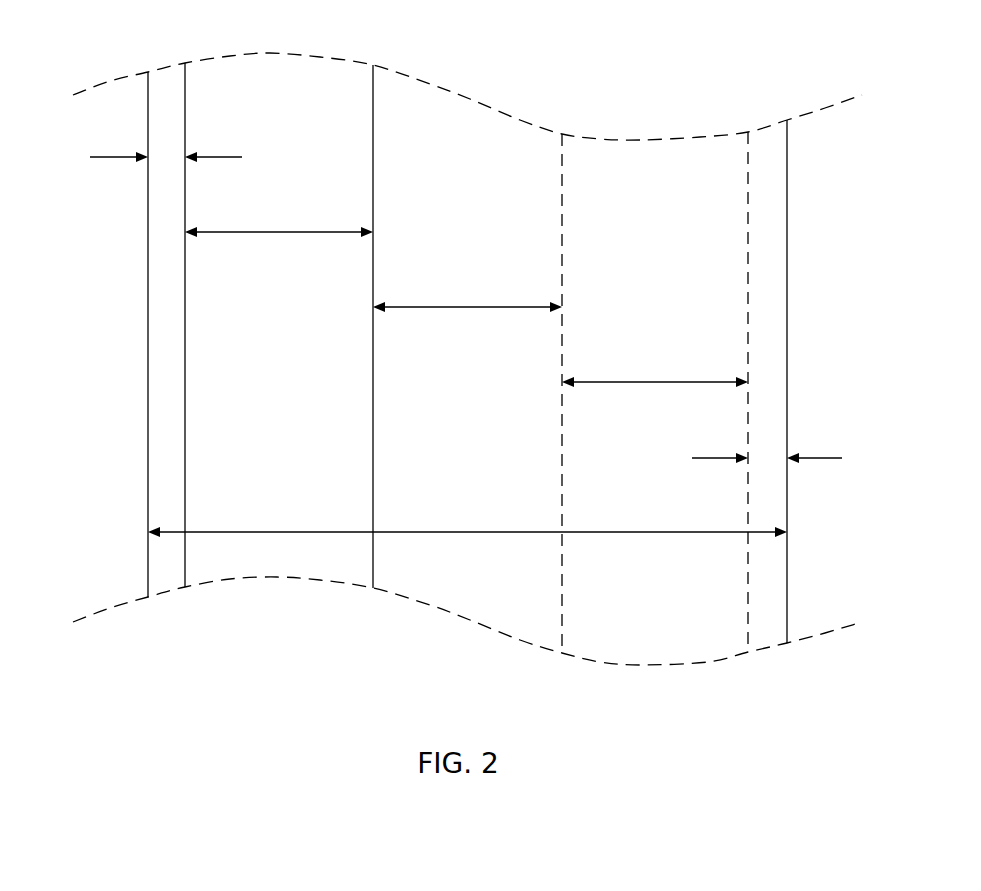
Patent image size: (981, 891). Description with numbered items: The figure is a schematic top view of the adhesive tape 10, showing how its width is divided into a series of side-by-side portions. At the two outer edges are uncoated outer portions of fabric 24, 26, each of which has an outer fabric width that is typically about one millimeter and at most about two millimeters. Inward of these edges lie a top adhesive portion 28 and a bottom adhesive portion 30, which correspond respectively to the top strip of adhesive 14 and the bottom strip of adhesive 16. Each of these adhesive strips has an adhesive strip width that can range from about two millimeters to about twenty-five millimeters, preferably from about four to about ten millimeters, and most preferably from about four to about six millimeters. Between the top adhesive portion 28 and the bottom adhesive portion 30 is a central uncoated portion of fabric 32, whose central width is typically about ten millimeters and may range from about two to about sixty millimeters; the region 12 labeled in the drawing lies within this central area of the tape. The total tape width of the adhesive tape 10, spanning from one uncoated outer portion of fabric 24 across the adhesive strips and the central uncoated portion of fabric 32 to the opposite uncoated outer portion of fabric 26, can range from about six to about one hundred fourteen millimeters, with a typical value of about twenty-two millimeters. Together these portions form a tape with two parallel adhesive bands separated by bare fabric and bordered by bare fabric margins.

The adhesive tape 10 is at (603, 78).
The core region 12 is at (460, 415).
The top strip of adhesive 14 is at (265, 344).
The bottom strip of adhesive 16 is at (708, 674).
The uncoated outer portion of fabric 24 is at (157, 277).
The uncoated outer portion of fabric 26 is at (767, 262).
The top adhesive portion 28 is at (261, 73).
The bottom adhesive portion 30 is at (694, 156).
The central uncoated portion of fabric 32 is at (465, 113).